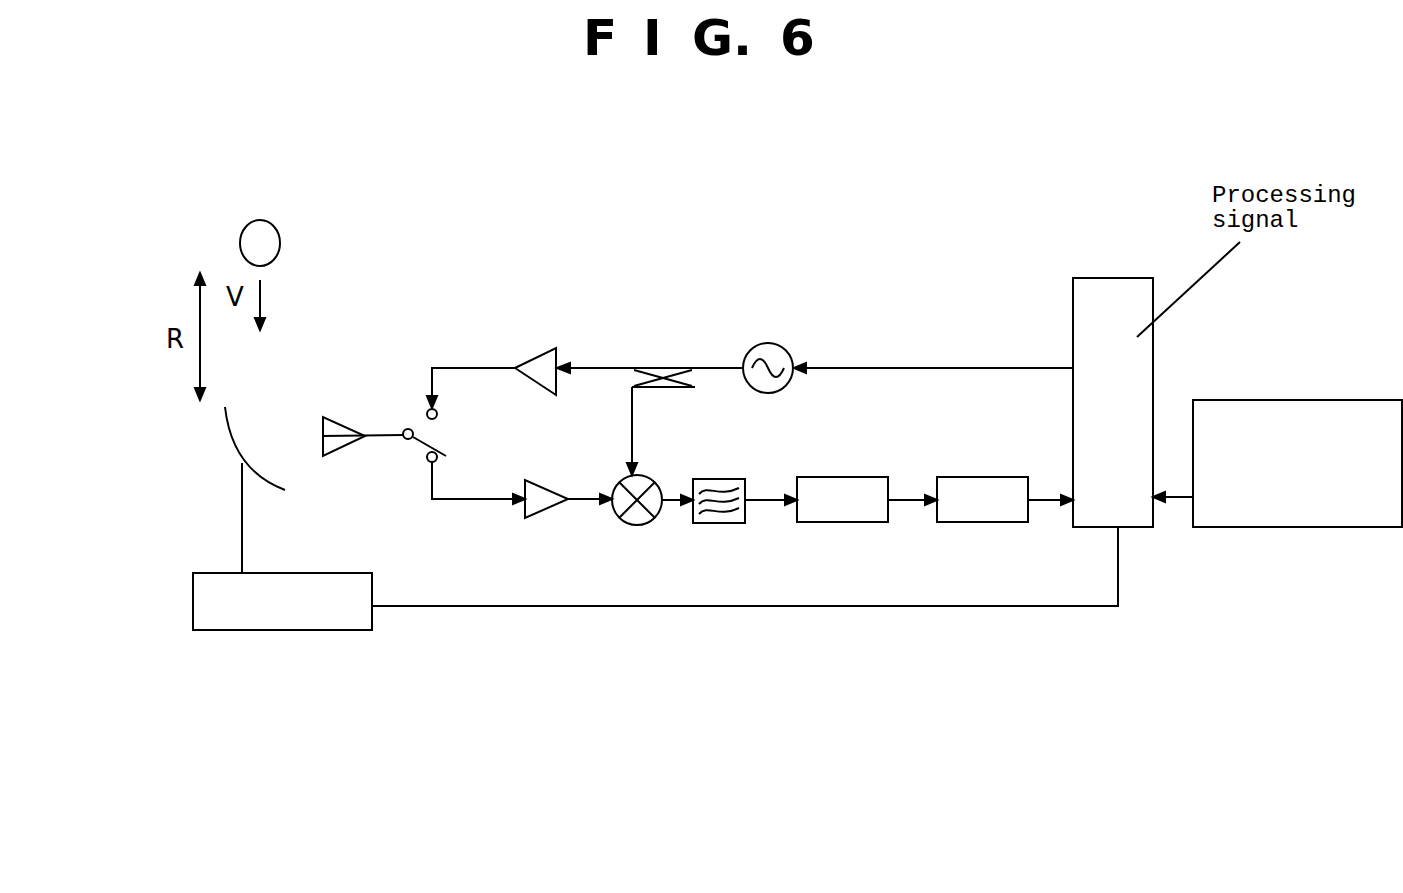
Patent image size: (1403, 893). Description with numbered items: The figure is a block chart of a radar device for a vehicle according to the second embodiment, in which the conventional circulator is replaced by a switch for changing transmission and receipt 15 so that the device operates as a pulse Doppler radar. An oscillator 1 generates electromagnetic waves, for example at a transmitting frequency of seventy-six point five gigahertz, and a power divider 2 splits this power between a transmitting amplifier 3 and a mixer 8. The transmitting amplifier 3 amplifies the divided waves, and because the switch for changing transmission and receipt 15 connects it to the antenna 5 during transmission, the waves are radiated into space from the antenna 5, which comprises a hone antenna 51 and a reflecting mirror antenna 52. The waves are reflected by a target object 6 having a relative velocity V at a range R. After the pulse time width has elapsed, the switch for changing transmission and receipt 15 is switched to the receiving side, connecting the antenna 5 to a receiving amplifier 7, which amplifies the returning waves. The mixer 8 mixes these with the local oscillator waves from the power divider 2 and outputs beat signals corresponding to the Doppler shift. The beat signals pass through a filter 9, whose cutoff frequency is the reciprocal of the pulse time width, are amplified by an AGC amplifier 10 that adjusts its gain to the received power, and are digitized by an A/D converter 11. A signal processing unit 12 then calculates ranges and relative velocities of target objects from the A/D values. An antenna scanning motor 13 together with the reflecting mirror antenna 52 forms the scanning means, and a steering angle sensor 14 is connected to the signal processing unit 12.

The oscillator 1 is at (759, 344).
The power divider 2 is at (664, 364).
The transmitting amplifier 3 is at (532, 355).
The antenna for transmitting and receiving 5 is at (314, 387).
The hone antenna 51 is at (363, 406).
The reflecting mirror antenna 52 is at (228, 430).
The target object 6 is at (279, 230).
The receiving amplifier 7 is at (545, 518).
The mixer 8 is at (630, 525).
The filter 9 is at (718, 523).
The AGC amplifier 10 is at (845, 522).
The A/D converter 11 is at (993, 522).
The signal processing unit 12 is at (1108, 276).
The antenna scanning motor 13 is at (262, 630).
The steering angle sensor 14 is at (1298, 398).
The switch for changing transmission and receipt 15 is at (437, 443).